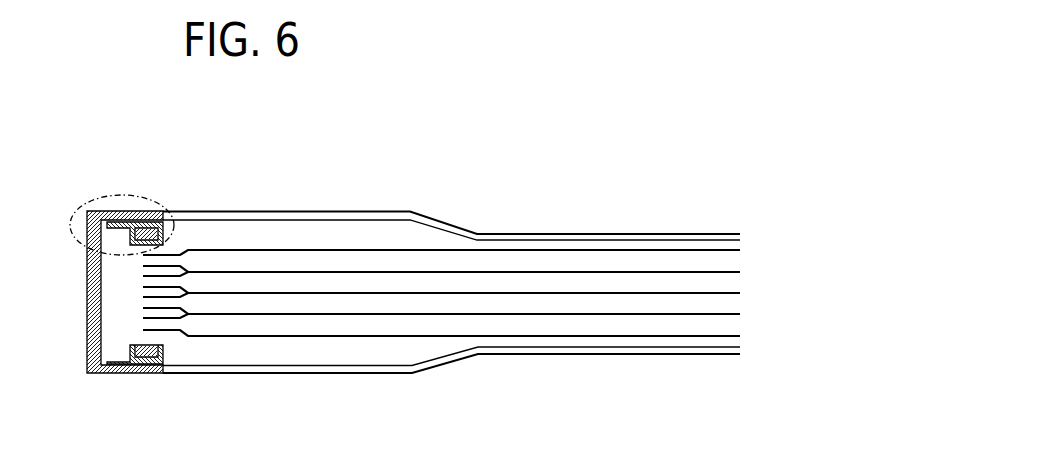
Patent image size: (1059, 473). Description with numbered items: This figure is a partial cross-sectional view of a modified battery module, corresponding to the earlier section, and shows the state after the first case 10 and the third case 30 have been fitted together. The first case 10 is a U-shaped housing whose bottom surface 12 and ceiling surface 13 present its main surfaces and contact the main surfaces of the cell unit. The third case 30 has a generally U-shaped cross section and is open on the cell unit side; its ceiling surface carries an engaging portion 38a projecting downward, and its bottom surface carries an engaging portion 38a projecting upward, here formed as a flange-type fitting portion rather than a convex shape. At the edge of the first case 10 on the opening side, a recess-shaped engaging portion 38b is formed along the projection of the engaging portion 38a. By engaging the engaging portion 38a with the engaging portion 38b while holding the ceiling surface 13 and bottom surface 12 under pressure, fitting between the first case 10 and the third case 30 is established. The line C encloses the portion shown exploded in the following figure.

The first case 10 is at (613, 214).
The bottom surface of the first case 12 is at (368, 374).
The ceiling surface of the first case 13 is at (388, 210).
The third case 30 is at (80, 306).
The engaging portion 38a is at (146, 213).
The recess-shaped engaging portion 38b is at (172, 240).
The line C is at (167, 207).